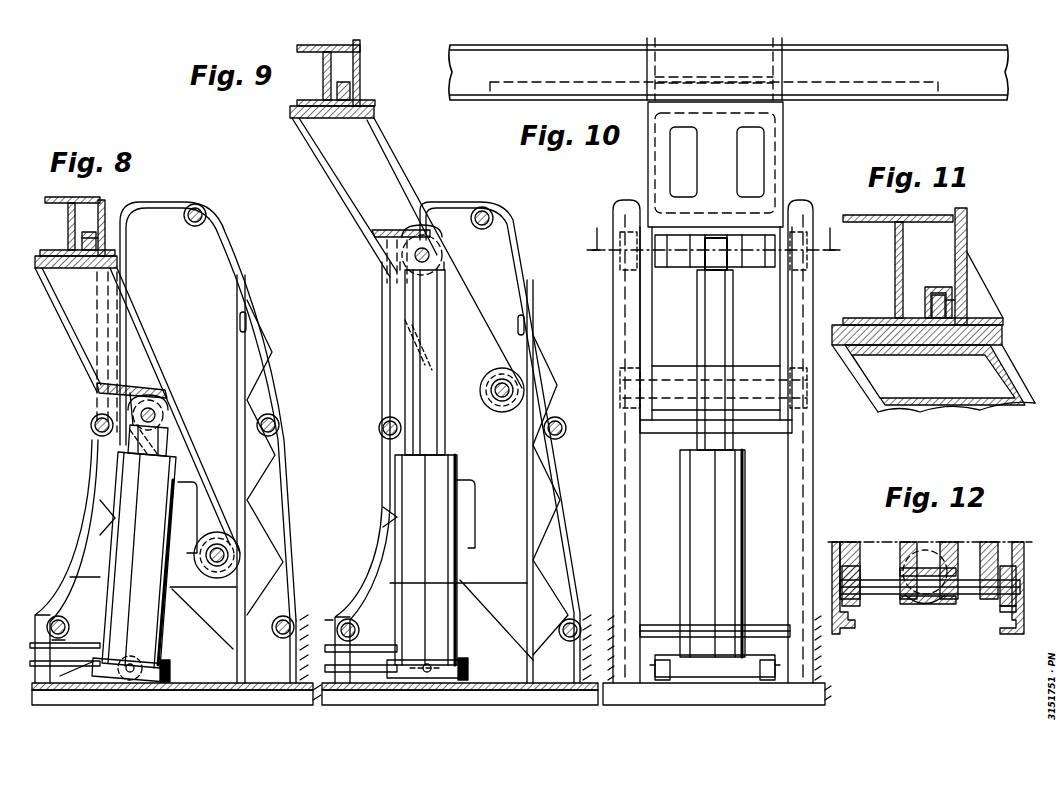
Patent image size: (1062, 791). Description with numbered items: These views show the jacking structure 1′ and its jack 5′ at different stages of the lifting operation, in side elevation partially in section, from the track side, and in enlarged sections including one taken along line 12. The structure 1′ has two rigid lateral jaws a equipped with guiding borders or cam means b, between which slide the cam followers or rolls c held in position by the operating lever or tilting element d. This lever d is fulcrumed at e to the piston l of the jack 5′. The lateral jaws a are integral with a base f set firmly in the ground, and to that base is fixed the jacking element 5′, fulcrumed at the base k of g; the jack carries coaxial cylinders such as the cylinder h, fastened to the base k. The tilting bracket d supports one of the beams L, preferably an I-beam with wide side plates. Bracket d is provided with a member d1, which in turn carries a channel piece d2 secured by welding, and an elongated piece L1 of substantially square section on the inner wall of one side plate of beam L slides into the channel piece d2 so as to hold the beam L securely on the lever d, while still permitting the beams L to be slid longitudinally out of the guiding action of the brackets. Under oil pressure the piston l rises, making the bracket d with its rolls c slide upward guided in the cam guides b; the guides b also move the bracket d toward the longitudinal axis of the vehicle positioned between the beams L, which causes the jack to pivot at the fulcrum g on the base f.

In FIG. 8, the beam L is at (47, 197).
In FIG. 9, the beam L is at (310, 53).
In FIG. 10, the beam L is at (1008, 60).
In FIG. 11, the beam L is at (895, 270).
In FIG. 8, the elongated piece L1 is at (82, 262).
In FIG. 10, the elongated piece L1 is at (912, 82).
In FIG. 11, the elongated piece L1 is at (958, 300).
In FIG. 8, the member d1 is at (108, 206).
In FIG. 9, the member d1 is at (362, 48).
In FIG. 10, the member d1 is at (715, 132).
In FIG. 11, the member d1 is at (968, 238).
In FIG. 8, the channel piece d2 is at (86, 238).
In FIG. 9, the channel piece d2 is at (352, 85).
In FIG. 11, the channel piece d2 is at (932, 287).
In FIG. 8, the operating lever d is at (135, 322).
In FIG. 9, the operating lever d is at (395, 160).
In FIG. 11, the operating lever d is at (1010, 355).
In FIG. 12, the operating lever d is at (990, 542).
In FIG. 8, the lateral jaws a is at (165, 442).
In FIG. 9, the lateral jaws a is at (500, 225).
In FIG. 10, the lateral jaws a is at (613, 450).
In FIG. 11, the lateral jaws a is at (820, 433).
In FIG. 12, the lateral jaws a is at (1025, 548).
In FIG. 8, the cam means b is at (121, 222).
In FIG. 9, the cam means b is at (527, 480).
In FIG. 10, the cam means b is at (628, 320).
In FIG. 12, the cam means b is at (1005, 612).
In FIG. 8, the structure 1′ is at (250, 296).
In FIG. 9, the structure 1′ is at (528, 280).
In FIG. 10, the structure 1′ is at (815, 470).
In FIG. 8, the fulcrum e is at (152, 408).
In FIG. 9, the fulcrum e is at (430, 256).
In FIG. 10, the fulcrum e is at (700, 255).
In FIG. 8, the cam followers c is at (160, 412).
In FIG. 9, the cam followers c is at (440, 245).
In FIG. 10, the cam followers c is at (795, 230).
In FIG. 12, the cam followers c is at (855, 606).
In FIG. 8, the piston l is at (170, 443).
In FIG. 9, the piston l is at (408, 380).
In FIG. 10, the piston l is at (735, 320).
In FIG. 12, the piston l is at (920, 600).
In FIG. 8, the cylinder h is at (108, 612).
In FIG. 9, the cylinder h is at (458, 553).
In FIG. 10, the cylinder h is at (680, 500).
In FIG. 8, the jack 5′ is at (165, 600).
In FIG. 9, the jack 5′ is at (460, 462).
In FIG. 10, the jack 5′ is at (746, 555).
In FIG. 8, the fulcrum g is at (138, 668).
In FIG. 9, the fulcrum g is at (410, 660).
In FIG. 10, the fulcrum g is at (672, 665).
In FIG. 8, the base k is at (172, 670).
In FIG. 9, the base k is at (470, 665).
In FIG. 10, the base k is at (648, 615).
In FIG. 8, the base f is at (258, 686).
In FIG. 9, the base f is at (545, 686).
In FIG. 10, the base f is at (798, 695).
In FIG. 10, the section line 12 is at (715, 229).